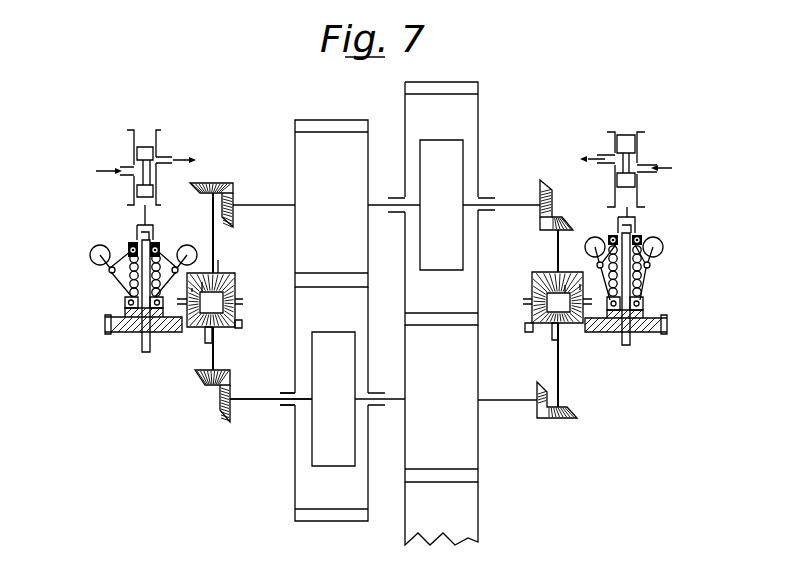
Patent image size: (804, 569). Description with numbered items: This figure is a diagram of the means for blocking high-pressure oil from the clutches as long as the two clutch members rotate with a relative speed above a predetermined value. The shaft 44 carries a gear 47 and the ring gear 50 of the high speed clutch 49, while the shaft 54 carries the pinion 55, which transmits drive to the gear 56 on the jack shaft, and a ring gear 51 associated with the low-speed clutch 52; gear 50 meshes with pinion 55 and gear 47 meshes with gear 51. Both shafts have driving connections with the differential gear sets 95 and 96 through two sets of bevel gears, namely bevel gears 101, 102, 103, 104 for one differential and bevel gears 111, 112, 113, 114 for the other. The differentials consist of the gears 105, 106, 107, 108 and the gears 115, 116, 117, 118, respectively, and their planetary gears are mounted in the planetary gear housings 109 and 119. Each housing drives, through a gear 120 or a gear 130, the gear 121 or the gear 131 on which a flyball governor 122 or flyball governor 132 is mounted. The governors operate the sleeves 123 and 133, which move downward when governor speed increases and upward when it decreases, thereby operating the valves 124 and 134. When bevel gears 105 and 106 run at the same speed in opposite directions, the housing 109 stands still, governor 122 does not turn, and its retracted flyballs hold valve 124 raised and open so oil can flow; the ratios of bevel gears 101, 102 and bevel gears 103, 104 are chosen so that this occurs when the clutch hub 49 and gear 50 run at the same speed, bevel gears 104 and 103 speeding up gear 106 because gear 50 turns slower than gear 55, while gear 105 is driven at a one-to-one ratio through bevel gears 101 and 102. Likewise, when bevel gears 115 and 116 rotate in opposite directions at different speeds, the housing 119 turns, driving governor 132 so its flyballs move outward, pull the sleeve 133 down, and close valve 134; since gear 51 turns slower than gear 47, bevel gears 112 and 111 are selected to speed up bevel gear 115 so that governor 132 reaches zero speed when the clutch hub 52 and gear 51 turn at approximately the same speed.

The shaft 44 is at (508, 203).
The gear 47 is at (320, 138).
The high speed clutch 49 is at (449, 157).
The ring gear 50 is at (473, 102).
The ring gear 51 is at (360, 296).
The low-speed clutch 52 is at (342, 360).
The shaft 54 is at (500, 402).
The pinion 55 is at (472, 454).
The gear 56 is at (473, 503).
The differential gear set 95 is at (543, 272).
The differential gear set 96 is at (222, 268).
The bevel gear 101 is at (562, 420).
The bevel gear 102 is at (557, 355).
The bevel gear 103 is at (565, 220).
The bevel gear 104 is at (548, 187).
The bevel gear 105 is at (545, 325).
The bevel gear 106 is at (566, 288).
The gear 107 is at (582, 287).
The gear 108 is at (533, 304).
The planetary gear housing 109 is at (533, 280).
The bevel gear 111 is at (200, 375).
The bevel gear 112 is at (222, 418).
The bevel gear 113 is at (207, 182).
The bevel gear 114 is at (235, 192).
The bevel gear 115 is at (203, 315).
The bevel gear 116 is at (202, 285).
The gear 117 is at (235, 285).
The gear 118 is at (192, 290).
The planetary gear housing 119 is at (235, 275).
The gear 120 is at (527, 327).
The gear 121 is at (600, 333).
The flyball governor 122 is at (647, 280).
The sleeve 123 is at (637, 218).
The valve 124 is at (623, 137).
The gear 130 is at (242, 325).
The gear 131 is at (118, 332).
The flyball governor 132 is at (118, 280).
The sleeve 133 is at (155, 225).
The valve 134 is at (140, 143).